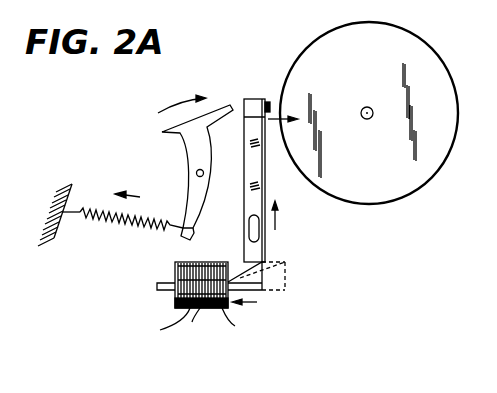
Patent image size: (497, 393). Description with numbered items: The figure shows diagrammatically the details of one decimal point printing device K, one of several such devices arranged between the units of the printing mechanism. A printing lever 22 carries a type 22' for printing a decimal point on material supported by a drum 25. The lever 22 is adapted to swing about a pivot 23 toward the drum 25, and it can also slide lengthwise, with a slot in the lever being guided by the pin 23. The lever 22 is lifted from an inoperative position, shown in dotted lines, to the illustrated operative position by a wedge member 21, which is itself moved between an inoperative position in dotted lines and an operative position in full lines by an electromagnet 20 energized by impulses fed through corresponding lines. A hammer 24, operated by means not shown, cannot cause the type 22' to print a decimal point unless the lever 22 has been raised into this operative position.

The electromagnet 20 is at (196, 300).
The wedge member 21 is at (260, 292).
The printing lever 22 is at (271, 180).
The type 22' is at (296, 92).
The pivot 23 is at (252, 238).
The hammer 24 is at (194, 157).
The drum 25 is at (393, 192).
The decimal point printing device K is at (271, 89).